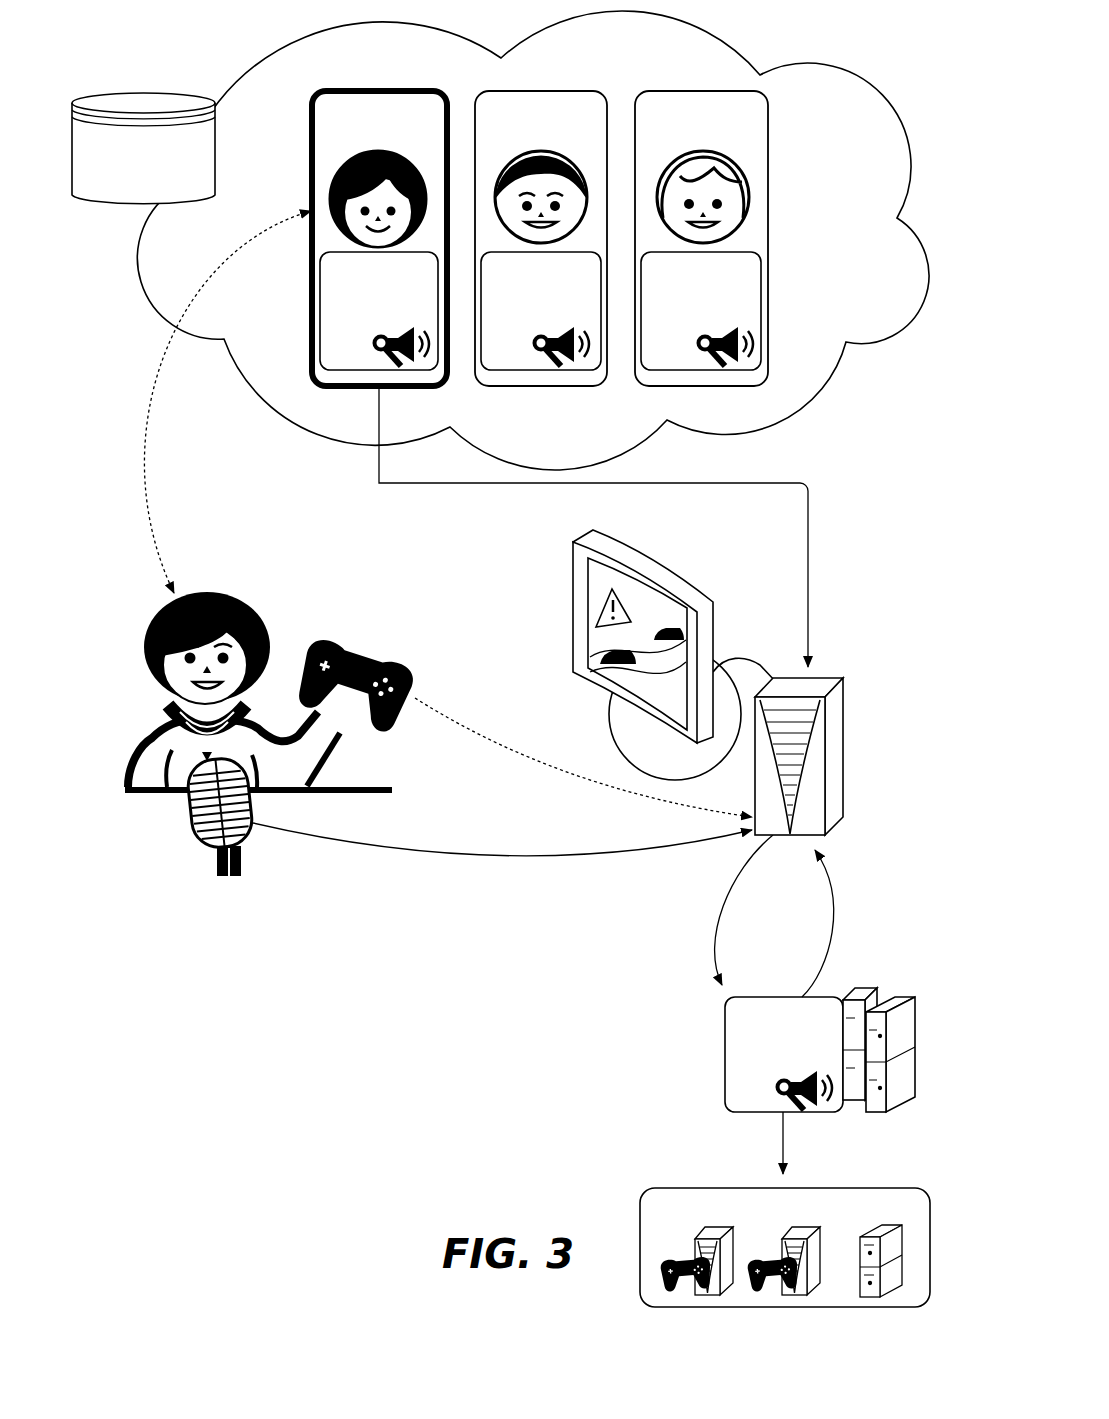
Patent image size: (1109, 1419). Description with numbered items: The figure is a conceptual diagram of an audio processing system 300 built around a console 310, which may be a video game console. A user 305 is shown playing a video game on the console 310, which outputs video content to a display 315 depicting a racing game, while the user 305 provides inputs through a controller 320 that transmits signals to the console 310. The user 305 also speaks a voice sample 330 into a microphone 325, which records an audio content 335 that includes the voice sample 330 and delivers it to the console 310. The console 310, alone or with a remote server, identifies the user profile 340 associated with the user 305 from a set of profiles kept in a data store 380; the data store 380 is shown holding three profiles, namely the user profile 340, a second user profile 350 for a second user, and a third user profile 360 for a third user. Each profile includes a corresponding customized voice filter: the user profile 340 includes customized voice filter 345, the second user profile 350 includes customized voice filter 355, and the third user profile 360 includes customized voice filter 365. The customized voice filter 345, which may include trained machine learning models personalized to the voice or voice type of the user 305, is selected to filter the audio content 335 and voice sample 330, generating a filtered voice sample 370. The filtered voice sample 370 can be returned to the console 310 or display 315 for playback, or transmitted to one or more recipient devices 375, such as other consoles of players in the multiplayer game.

The audio processing system 300 is at (915, 102).
The user 305 is at (203, 591).
The console 310 is at (847, 747).
The display 315 is at (647, 550).
The controller 320 is at (370, 645).
The microphone 325 is at (203, 843).
The voice sample 330 is at (157, 713).
The audio content 335 is at (513, 904).
The user profile 340 is at (379, 238).
The customized voice filter 345 is at (581, 682).
The second user profile 350 is at (541, 238).
The customized voice filter 355 is at (541, 311).
The third user profile 360 is at (701, 238).
The customized voice filter 365 is at (701, 311).
The filtered voice sample 370 is at (869, 1012).
The recipient devices 375 is at (785, 1247).
The data store 380 is at (143, 148).